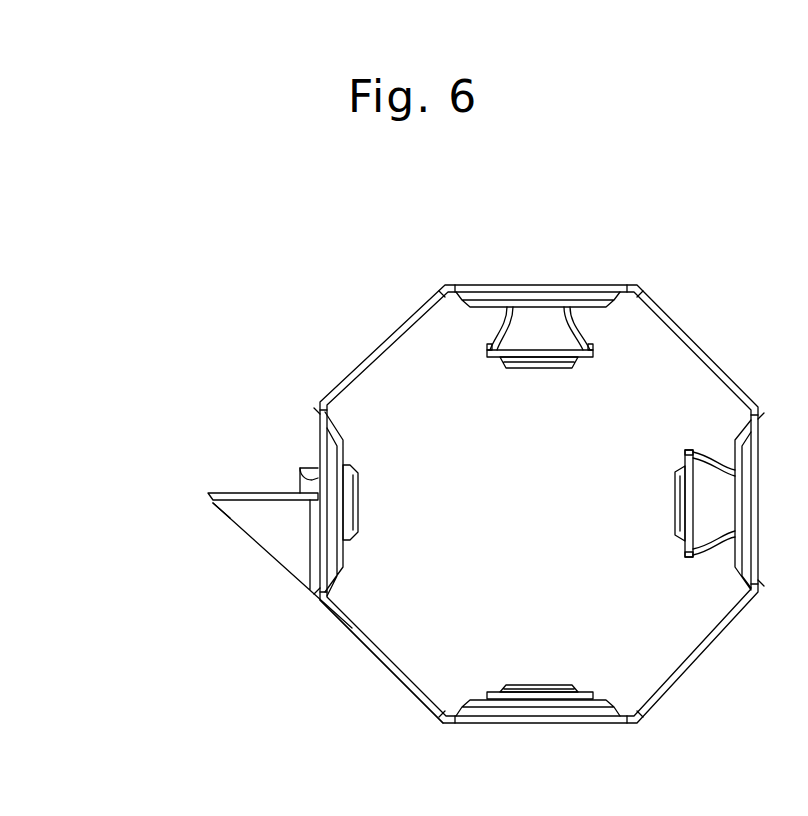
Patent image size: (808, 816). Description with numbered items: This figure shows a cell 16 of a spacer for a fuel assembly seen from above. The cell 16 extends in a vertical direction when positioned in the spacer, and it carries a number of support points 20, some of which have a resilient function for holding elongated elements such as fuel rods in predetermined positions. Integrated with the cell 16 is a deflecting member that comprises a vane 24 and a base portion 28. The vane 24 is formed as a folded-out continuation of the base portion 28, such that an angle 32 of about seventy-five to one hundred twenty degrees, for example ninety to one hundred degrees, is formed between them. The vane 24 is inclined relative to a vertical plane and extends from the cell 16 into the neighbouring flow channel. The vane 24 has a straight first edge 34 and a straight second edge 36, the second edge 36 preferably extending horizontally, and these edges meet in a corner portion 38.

The cell 16 is at (320, 254).
The support points 20 is at (530, 683).
The vane 24 is at (288, 545).
The base portion 28 is at (318, 443).
The angle 32 is at (300, 465).
The first edge 34 is at (300, 582).
The second edge 36 is at (236, 492).
The corner portion 38 is at (215, 505).